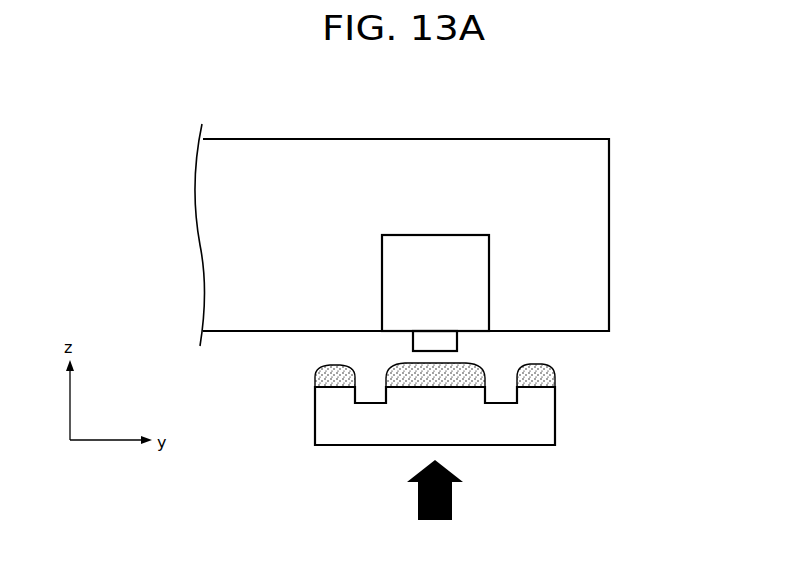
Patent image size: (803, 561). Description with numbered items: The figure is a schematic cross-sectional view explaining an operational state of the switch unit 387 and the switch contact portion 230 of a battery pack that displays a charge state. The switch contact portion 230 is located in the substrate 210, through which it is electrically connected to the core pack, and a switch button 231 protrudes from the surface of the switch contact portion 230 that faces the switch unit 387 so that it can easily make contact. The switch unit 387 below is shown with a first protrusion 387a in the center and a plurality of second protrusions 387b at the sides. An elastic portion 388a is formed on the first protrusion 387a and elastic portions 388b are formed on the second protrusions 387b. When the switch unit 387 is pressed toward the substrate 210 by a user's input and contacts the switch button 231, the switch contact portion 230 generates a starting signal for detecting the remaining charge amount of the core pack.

The substrate 210 is at (603, 262).
The switch contact portion 230 is at (485, 248).
The switch button 231 is at (428, 340).
The switch unit 387 is at (374, 451).
The first protrusion 387a is at (453, 392).
The second protrusions 387b is at (542, 392).
The elastic portion 388a is at (462, 367).
The elastic portion 388b is at (550, 377).